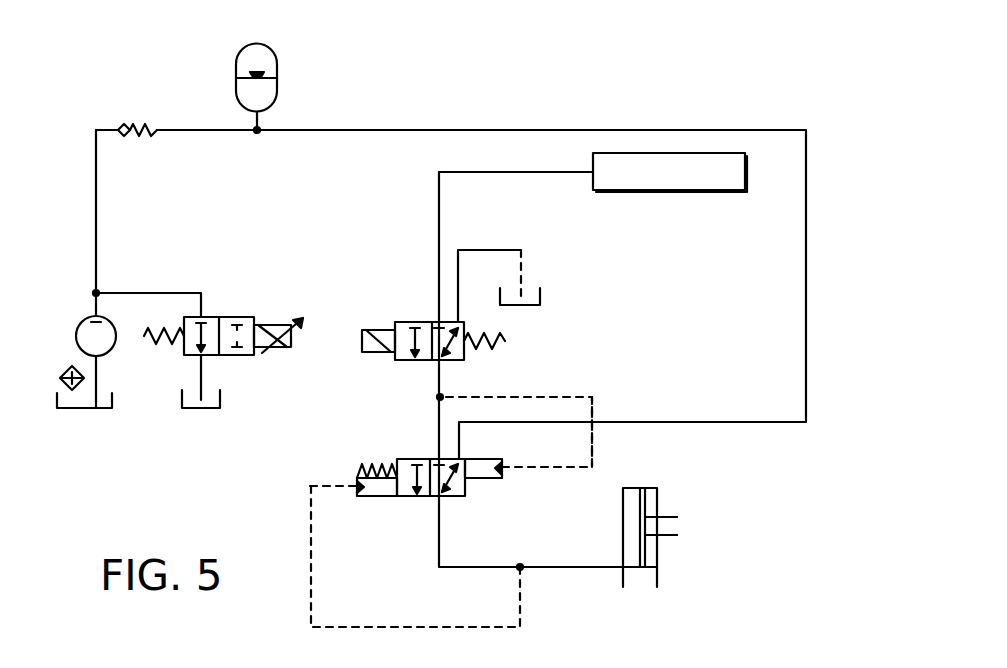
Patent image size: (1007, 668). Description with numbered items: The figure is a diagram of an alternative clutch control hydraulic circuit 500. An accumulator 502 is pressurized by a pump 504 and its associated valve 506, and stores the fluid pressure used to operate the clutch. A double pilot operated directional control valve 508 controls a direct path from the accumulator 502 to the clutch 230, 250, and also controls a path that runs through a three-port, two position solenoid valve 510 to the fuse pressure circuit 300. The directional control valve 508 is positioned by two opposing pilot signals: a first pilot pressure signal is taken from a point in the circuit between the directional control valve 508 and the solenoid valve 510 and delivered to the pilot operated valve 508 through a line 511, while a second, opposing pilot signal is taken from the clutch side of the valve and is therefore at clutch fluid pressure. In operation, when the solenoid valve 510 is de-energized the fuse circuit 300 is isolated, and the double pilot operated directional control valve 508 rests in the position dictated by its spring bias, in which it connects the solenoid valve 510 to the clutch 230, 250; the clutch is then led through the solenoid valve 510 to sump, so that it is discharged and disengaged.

The hydraulic circuit 500 is at (830, 220).
The accumulator 502 is at (236, 77).
The pump 504 is at (92, 322).
The valve 506 is at (238, 357).
The double pilot operated directional control valve 508 is at (415, 459).
The three-port, two position solenoid valve 510 is at (418, 322).
The line 511 is at (555, 393).
The fuse pressure circuit 300 is at (670, 172).
The clutch 230 is at (672, 507).
The clutch 250 is at (661, 526).